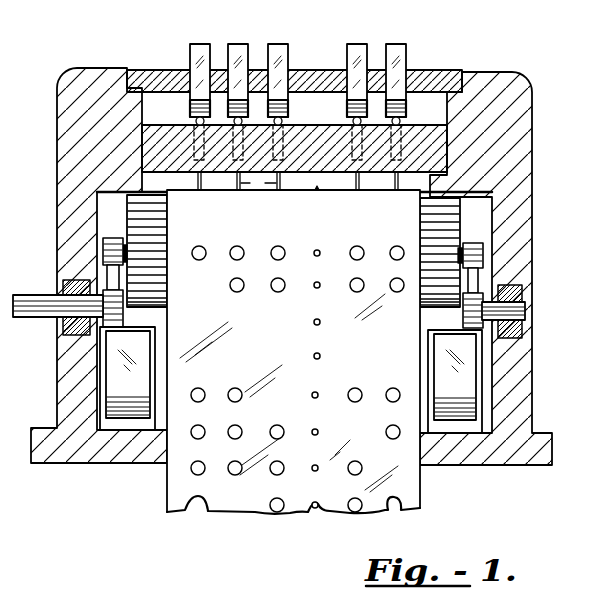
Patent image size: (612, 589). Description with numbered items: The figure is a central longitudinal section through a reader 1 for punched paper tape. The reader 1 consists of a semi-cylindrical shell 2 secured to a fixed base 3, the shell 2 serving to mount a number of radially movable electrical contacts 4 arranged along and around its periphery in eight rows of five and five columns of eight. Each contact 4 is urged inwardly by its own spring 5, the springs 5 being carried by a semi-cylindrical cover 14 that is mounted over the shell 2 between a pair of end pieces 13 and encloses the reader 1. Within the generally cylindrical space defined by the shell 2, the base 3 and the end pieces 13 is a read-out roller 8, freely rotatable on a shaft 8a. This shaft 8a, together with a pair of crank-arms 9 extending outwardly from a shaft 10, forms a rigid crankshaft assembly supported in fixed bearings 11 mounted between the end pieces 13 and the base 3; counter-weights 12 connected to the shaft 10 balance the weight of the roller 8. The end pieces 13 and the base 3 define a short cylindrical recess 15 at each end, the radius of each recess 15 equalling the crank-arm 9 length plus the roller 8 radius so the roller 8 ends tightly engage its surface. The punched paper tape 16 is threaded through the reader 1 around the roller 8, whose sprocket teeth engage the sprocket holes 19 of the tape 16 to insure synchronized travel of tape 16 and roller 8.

The reader 1 is at (465, 63).
The semi-cylindrical shell 2 is at (412, 132).
The fixed base 3 is at (523, 389).
The electrical contacts 4 is at (258, 184).
The spring 5 is at (276, 47).
The read-out roller 8 is at (450, 227).
The shaft 8a is at (473, 251).
The crank-arms 9 is at (115, 252).
The shaft 10 is at (34, 306).
The fixed bearings 11 is at (520, 288).
The counter-weights 12 is at (116, 402).
The end pieces 13 is at (518, 110).
The semi-cylindrical cover 14 is at (313, 82).
The cylindrical recess 15 is at (115, 194).
The punched paper tape 16 is at (408, 492).
The sprocket holes 19 is at (316, 510).